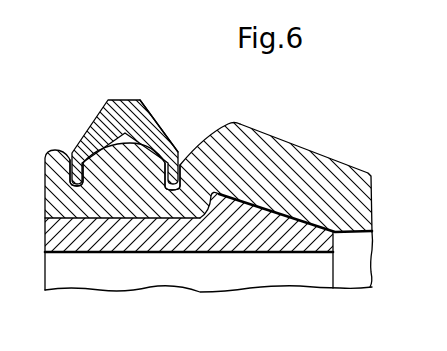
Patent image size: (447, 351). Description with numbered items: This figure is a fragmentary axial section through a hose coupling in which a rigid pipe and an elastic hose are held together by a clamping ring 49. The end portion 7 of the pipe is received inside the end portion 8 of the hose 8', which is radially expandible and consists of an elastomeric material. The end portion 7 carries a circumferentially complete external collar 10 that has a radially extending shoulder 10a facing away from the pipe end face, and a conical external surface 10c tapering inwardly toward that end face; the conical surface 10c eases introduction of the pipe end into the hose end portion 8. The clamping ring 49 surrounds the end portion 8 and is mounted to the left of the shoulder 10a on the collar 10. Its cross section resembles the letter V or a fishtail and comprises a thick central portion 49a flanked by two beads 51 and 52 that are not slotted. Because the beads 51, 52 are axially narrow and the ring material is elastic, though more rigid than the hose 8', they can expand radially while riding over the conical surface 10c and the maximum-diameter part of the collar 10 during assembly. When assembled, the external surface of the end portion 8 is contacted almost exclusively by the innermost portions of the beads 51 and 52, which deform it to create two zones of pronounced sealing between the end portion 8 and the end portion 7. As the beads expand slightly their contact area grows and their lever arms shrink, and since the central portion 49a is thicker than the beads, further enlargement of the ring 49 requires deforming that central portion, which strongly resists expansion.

The end portion of the pipe 7 is at (60, 235).
The end portion of the hose 8 is at (295, 176).
The hose 8' is at (388, 244).
The collar 10 is at (233, 196).
The shoulder 10a is at (216, 205).
The conical external surface 10c is at (312, 238).
The clamping ring 49 is at (125, 99).
The central portion of the ring 49a is at (141, 100).
The bead 51 is at (72, 157).
The bead 52 is at (182, 157).